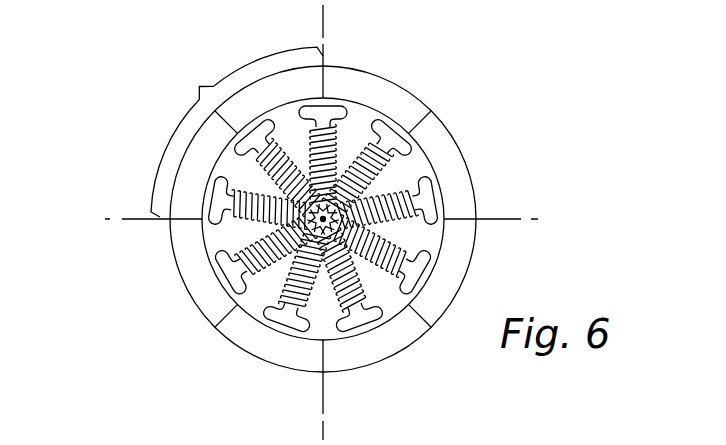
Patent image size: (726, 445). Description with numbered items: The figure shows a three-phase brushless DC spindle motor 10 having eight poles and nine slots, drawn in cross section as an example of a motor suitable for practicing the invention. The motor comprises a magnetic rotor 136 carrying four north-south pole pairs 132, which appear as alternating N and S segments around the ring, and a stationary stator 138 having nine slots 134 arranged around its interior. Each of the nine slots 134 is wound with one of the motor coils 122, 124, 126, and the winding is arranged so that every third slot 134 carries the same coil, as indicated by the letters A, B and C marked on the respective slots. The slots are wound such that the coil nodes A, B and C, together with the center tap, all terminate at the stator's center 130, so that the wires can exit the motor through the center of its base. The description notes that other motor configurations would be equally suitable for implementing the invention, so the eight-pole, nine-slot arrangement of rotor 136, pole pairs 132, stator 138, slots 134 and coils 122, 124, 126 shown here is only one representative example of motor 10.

The electric motor 10 is at (485, 115).
The motor coil 122 is at (263, 267).
The motor coil 124 is at (350, 268).
The motor coil 126 is at (348, 305).
The stator's center 130 is at (312, 241).
The north-south pole pairs 132 is at (237, 132).
The slots 134 is at (261, 323).
The magnetic rotor 136 is at (362, 71).
The stationary stator 138 is at (408, 240).